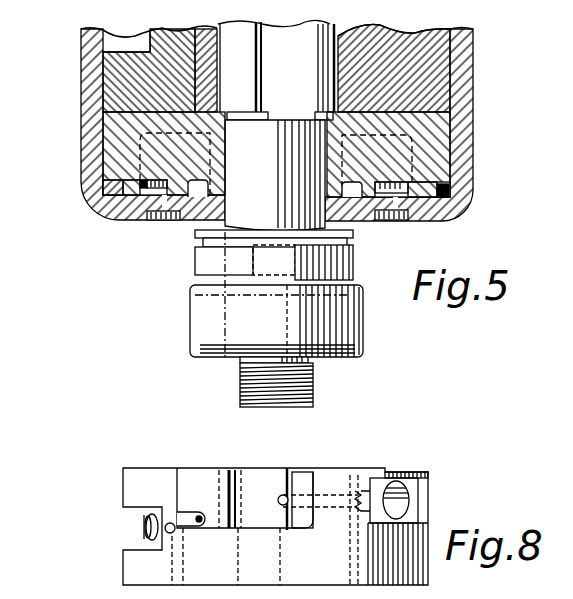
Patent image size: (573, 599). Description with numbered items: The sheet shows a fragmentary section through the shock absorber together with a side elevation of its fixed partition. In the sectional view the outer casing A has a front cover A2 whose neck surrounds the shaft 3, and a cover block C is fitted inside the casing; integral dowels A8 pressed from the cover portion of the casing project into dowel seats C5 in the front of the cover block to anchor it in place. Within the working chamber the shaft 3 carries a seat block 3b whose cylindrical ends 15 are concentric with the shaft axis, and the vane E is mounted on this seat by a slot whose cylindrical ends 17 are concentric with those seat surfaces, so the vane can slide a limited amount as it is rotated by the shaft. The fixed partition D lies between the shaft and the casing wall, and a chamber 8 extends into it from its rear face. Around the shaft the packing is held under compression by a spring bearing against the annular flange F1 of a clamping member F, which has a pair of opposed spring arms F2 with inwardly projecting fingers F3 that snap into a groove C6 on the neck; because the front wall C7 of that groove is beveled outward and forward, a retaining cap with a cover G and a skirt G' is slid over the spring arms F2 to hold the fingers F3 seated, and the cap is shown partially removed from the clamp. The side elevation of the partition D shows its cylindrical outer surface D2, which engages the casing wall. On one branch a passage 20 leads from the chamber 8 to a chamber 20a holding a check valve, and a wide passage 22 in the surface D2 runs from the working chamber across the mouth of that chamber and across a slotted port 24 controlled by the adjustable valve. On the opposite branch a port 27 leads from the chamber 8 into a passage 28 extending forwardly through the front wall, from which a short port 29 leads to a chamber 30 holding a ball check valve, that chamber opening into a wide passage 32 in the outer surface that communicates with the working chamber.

In FIG. 5, the chamber 8 is at (113, 43).
In FIG. 8, the chamber 8 is at (257, 480).
In FIG. 5, the outer casing A is at (88, 82).
In FIG. 5, the fixed segmental partition D is at (117, 98).
In FIG. 8, the fixed segmental partition D is at (337, 475).
In FIG. 5, the dowel seats C5 is at (110, 182).
In FIG. 5, the vane E is at (433, 77).
In FIG. 5, the cover block C is at (433, 143).
In FIG. 5, the cylindrical ends 17 is at (327, 45).
In FIG. 5, the seat block 3b is at (306, 68).
In FIG. 5, the cylindrical ends 15 is at (245, 90).
In FIG. 5, the shaft 3 is at (275, 175).
In FIG. 5, the integral dowels A8 is at (162, 198).
In FIG. 5, the front cover A2 is at (440, 220).
In FIG. 5, the groove C6 is at (350, 240).
In FIG. 5, the beveled front wall C7 is at (358, 262).
In FIG. 5, the clamping member F is at (195, 278).
In FIG. 5, the annular flange F1 is at (215, 295).
In FIG. 5, the spring arms F2 is at (253, 260).
In FIG. 5, the fingers F3 is at (283, 247).
In FIG. 5, the cover G is at (251, 382).
In FIG. 5, the skirt G' is at (256, 322).
In FIG. 8, the passage 20 is at (287, 468).
In FIG. 8, the chamber 20a is at (413, 487).
In FIG. 8, the wide passage 22 is at (403, 505).
In FIG. 8, the slotted port 24 is at (298, 478).
In FIG. 8, the port 27 is at (185, 512).
In FIG. 8, the passage 28 is at (186, 555).
In FIG. 8, the short port 29 is at (168, 535).
In FIG. 8, the chamber 30 is at (140, 533).
In FIG. 8, the wide passage 32 is at (130, 512).
In FIG. 8, the cylindrical outer surface D2 is at (360, 554).